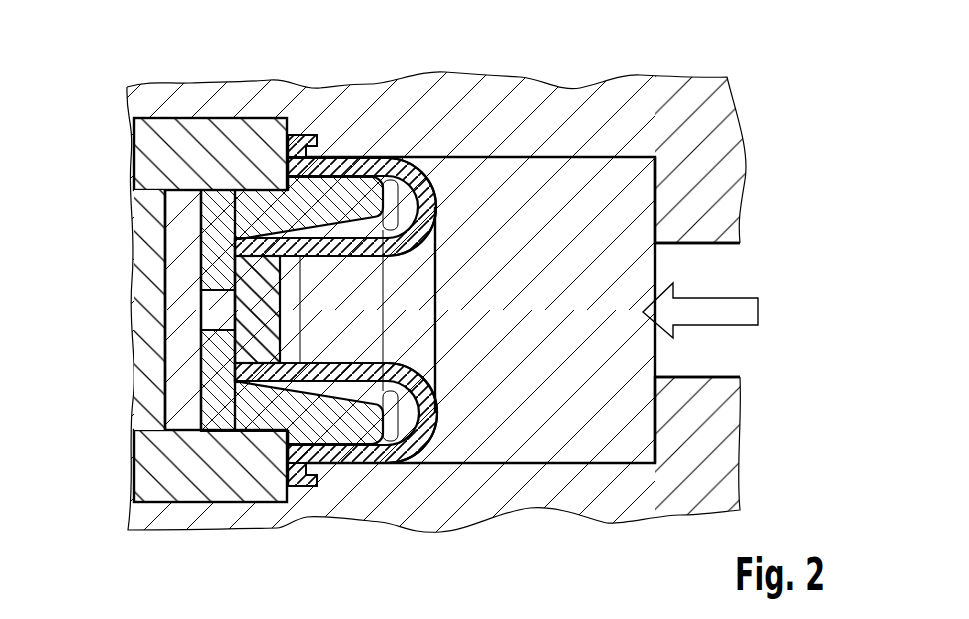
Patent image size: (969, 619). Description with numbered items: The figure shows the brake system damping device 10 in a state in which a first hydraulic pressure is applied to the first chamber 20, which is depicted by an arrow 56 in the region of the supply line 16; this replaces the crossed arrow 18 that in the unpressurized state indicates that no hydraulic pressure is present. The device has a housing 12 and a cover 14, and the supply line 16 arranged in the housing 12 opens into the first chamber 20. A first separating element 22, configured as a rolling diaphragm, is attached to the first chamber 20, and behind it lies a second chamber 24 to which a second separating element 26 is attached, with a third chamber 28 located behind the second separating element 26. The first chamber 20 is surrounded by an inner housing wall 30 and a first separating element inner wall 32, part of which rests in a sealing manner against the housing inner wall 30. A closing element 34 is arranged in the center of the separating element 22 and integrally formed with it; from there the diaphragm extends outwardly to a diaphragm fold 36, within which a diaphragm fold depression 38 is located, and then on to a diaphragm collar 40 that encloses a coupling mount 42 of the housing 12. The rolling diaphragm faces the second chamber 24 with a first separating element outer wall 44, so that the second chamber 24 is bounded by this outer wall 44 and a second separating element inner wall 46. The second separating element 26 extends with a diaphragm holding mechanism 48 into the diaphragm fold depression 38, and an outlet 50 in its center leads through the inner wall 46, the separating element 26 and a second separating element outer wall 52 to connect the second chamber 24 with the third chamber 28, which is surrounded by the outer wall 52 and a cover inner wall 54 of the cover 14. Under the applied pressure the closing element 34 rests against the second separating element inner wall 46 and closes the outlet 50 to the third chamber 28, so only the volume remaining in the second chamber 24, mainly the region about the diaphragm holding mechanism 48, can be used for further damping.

The brake system damping device 10 is at (766, 66).
The housing 12 is at (705, 125).
The cover 14 is at (208, 314).
The supply line 16 is at (735, 262).
The crossed arrow 18 is at (708, 347).
The first chamber 20 is at (633, 437).
The first separating element 22 is at (352, 160).
The second chamber 24 is at (210, 270).
The second separating element 26 is at (215, 210).
The third chamber 28 is at (182, 250).
The inner housing wall 30 is at (605, 158).
The first separating element inner wall 32 is at (280, 298).
The closing element 34 is at (263, 337).
The diaphragm fold 36 is at (434, 207).
The diaphragm fold depression 38 is at (423, 220).
The diaphragm collar 40 is at (297, 137).
The coupling mount 42 is at (307, 152).
The first separating element outer wall 44 is at (202, 394).
The second separating element inner wall 46 is at (236, 352).
The diaphragm holding mechanism 48 is at (398, 163).
The outlet 50 is at (200, 322).
The second separating element outer wall 52 is at (198, 390).
The cover inner wall 54 is at (172, 431).
The arrow 56 is at (748, 312).